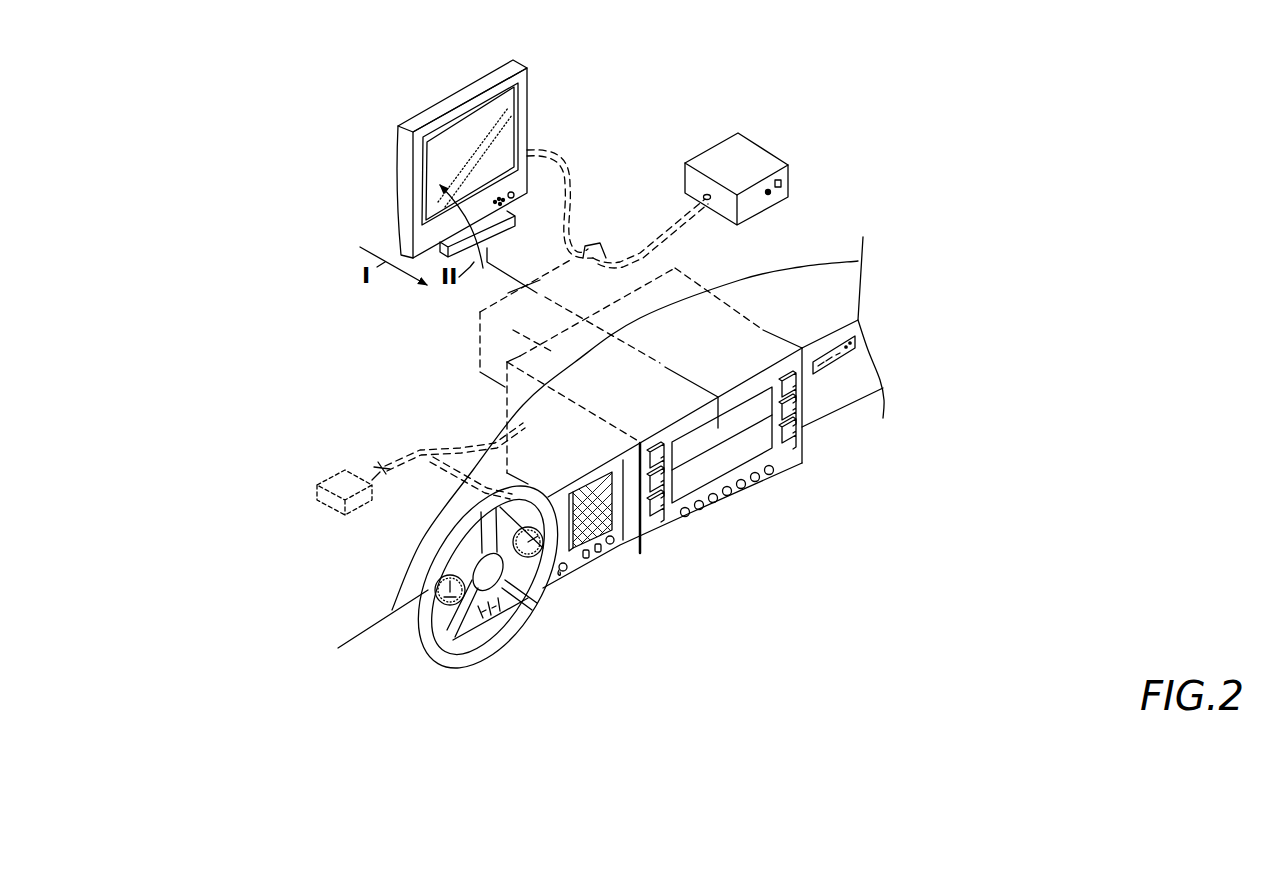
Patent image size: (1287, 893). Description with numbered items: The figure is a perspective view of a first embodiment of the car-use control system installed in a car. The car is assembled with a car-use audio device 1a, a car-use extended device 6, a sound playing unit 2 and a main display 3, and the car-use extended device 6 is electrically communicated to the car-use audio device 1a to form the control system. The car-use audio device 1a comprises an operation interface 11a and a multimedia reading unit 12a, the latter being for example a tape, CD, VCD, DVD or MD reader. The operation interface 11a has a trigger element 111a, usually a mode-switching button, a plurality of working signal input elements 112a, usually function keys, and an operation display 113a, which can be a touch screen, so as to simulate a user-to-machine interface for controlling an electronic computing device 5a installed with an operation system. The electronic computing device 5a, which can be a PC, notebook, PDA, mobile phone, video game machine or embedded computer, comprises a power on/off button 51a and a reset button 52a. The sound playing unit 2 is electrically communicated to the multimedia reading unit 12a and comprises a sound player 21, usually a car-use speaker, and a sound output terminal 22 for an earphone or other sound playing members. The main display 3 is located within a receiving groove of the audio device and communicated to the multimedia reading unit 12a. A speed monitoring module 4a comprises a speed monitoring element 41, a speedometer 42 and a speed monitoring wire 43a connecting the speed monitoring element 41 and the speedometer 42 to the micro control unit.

The car-use audio device 1a is at (706, 276).
The sound playing unit 2 is at (628, 520).
The sound player 21 is at (592, 558).
The sound output terminal 22 is at (613, 544).
The main display 3 is at (517, 62).
The speed monitoring module 4a is at (300, 479).
The speed monitoring element 41 is at (331, 507).
The speedometer 42 is at (547, 588).
The speed monitoring wire 43a is at (437, 463).
The electronic computing device 5a is at (758, 177).
The power on/off button 51a is at (781, 187).
The reset button 52a is at (770, 194).
The car-use extended device 6 is at (597, 243).
The operation interface 11a is at (748, 472).
The trigger element 111a is at (658, 520).
The working signal input elements 112a is at (668, 495).
The operation display 113a is at (712, 478).
The multimedia reading unit 12a is at (838, 356).